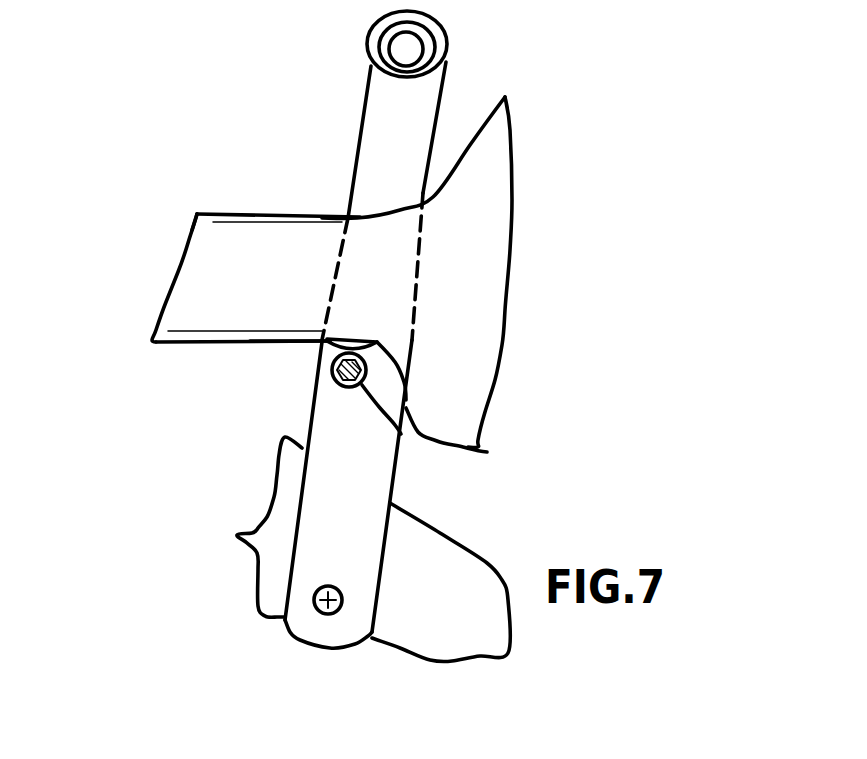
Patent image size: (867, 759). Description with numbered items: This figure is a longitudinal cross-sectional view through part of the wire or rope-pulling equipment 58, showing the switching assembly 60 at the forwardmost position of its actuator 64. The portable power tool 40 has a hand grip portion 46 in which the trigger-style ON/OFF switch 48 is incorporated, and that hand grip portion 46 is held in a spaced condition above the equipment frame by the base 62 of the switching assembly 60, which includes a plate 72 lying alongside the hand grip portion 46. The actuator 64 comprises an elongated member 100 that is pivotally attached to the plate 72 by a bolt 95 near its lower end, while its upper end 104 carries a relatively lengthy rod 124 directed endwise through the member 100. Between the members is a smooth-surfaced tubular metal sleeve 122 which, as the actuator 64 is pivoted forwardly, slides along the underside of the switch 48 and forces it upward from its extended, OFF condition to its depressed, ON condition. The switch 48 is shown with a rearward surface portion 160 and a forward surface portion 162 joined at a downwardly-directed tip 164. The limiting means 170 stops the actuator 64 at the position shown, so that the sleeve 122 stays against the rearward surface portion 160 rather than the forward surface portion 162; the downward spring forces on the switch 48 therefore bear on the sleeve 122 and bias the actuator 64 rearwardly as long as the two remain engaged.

The portable power tool 40 is at (305, 213).
The hand grip portion 46 is at (197, 212).
The trigger-style ON/OFF switch 48 is at (330, 344).
The wire or rope-pulling equipment 58 is at (487, 98).
The switching assembly 60 is at (236, 390).
The base or frame structure 62 is at (215, 476).
The actuator 64 is at (355, 180).
The plate 72 is at (257, 575).
The bolt 95 is at (313, 607).
The elongated member 100 is at (312, 400).
The upper end 104 is at (366, 43).
The tubular metal sleeve 122 is at (487, 452).
The rod 124 is at (433, 57).
The rearward surface portion 160 is at (330, 346).
The forward surface portion 162 is at (372, 362).
The downwardly-directed tip 164 is at (367, 372).
The limiting means 170 is at (410, 452).